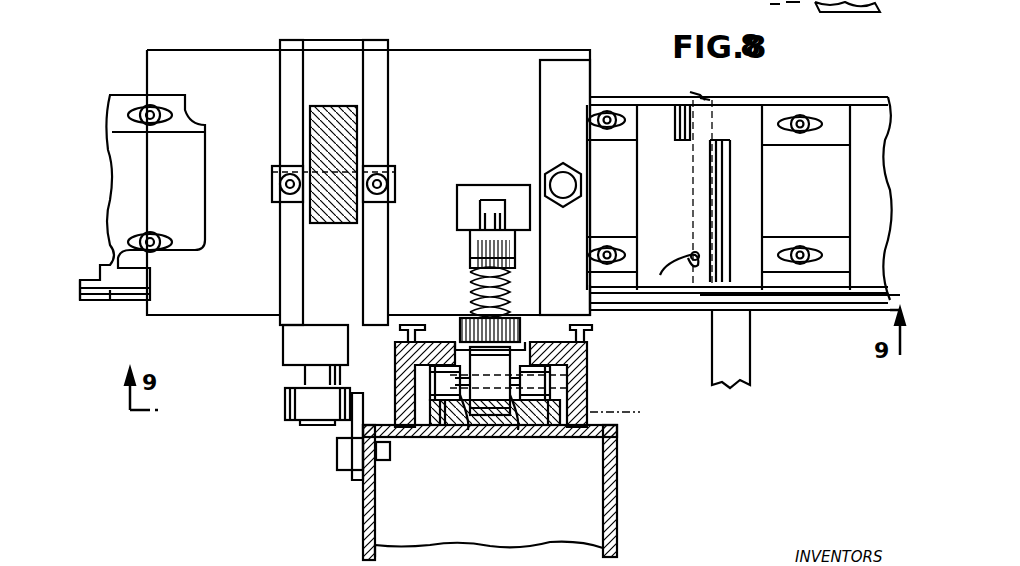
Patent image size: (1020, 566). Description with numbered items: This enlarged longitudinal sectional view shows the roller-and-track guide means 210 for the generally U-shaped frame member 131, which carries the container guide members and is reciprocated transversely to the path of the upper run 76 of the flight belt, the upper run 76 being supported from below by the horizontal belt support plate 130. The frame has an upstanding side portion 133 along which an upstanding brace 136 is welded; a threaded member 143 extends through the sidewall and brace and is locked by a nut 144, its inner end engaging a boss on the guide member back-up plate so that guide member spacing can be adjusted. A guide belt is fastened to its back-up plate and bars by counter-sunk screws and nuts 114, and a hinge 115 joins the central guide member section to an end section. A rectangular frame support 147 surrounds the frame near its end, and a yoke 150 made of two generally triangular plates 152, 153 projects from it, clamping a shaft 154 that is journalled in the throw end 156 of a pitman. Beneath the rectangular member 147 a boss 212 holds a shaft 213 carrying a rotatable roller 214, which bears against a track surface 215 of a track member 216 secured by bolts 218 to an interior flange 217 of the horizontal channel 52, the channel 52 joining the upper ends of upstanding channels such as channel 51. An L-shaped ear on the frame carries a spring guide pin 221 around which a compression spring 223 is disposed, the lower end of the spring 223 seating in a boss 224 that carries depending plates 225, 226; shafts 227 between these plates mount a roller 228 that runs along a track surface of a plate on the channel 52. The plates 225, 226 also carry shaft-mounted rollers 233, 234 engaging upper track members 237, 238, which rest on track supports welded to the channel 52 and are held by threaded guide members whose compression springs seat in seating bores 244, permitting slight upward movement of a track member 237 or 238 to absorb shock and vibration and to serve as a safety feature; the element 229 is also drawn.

The upstanding channel 51 is at (608, 514).
The channel-type supporting member 52 is at (618, 433).
The upper run 76 is at (98, 310).
The nut 114 is at (607, 110).
The hinge 115 is at (708, 118).
The belt support plate 130 is at (140, 315).
The U-shaped frame member 131 is at (473, 48).
The side portion 133 is at (455, 99).
The upstanding brace 136 is at (582, 60).
The threaded member 143 is at (564, 165).
The nut 144 is at (550, 185).
The rectangular frame support 147 is at (341, 40).
The yoke 150 is at (278, 42).
The yoke plate 152 is at (288, 70).
The yoke plate 153 is at (378, 72).
The shaft 154 is at (272, 196).
The throw end 156 is at (340, 225).
The guide means 210 is at (645, 412).
The boss 212 is at (280, 332).
The shaft 213 is at (305, 378).
The roller 214 is at (286, 400).
The track surface 215 is at (352, 418).
The track member 216 is at (350, 470).
The interior flange 217 is at (366, 490).
The bolt 218 is at (388, 458).
The spring guide pin 221 is at (468, 250).
The compression spring 223 is at (468, 282).
The boss 224 is at (462, 316).
The depending plate 225 is at (480, 440).
The depending plate 226 is at (550, 426).
The shaft 227 is at (548, 368).
The roller 228 is at (482, 426).
The bearing 229 is at (520, 426).
The roller 233 is at (575, 400).
The roller 234 is at (442, 426).
The upper track member 237 is at (580, 370).
The upper track member 238 is at (395, 350).
The seating bore 244 is at (586, 345).